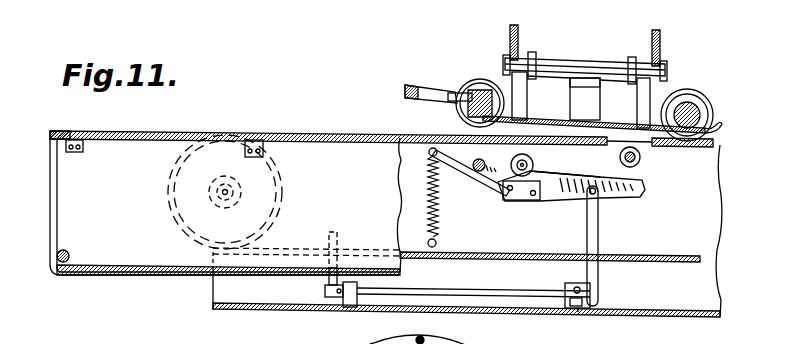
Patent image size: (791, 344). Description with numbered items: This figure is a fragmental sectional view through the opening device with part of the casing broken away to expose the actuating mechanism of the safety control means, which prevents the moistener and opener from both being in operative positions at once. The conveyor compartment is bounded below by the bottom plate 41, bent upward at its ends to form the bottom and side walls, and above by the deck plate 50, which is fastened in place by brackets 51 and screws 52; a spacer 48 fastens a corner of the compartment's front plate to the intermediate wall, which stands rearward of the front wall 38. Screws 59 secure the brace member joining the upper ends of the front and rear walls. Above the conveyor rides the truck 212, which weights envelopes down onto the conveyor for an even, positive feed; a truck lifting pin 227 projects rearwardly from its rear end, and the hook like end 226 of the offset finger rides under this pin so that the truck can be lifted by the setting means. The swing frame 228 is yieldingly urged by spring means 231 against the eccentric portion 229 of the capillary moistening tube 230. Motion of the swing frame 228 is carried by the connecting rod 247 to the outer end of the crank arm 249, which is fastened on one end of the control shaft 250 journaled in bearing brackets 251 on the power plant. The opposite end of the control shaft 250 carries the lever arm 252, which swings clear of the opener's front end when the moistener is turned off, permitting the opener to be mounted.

The front wall 38 is at (432, 337).
The bottom plate 41 is at (152, 278).
The spacer 48 is at (63, 270).
The deck plate 50 is at (155, 116).
The brackets 51 is at (84, 145).
The screws 52 is at (98, 116).
The screws 59 is at (422, 338).
The truck 212 is at (614, 114).
The hook like end 226 is at (436, 88).
The truck lifting pin 227 is at (461, 83).
The swing frame 228 is at (563, 196).
The eccentric portion 229 is at (540, 173).
The capillary moistening tube 230 is at (528, 160).
The spring means 231 is at (440, 200).
The connecting rod 247 is at (598, 240).
The crank arm 249 is at (578, 312).
The control shaft 250 is at (525, 289).
The bearing brackets 251 is at (566, 285).
The lever arm 252 is at (326, 284).